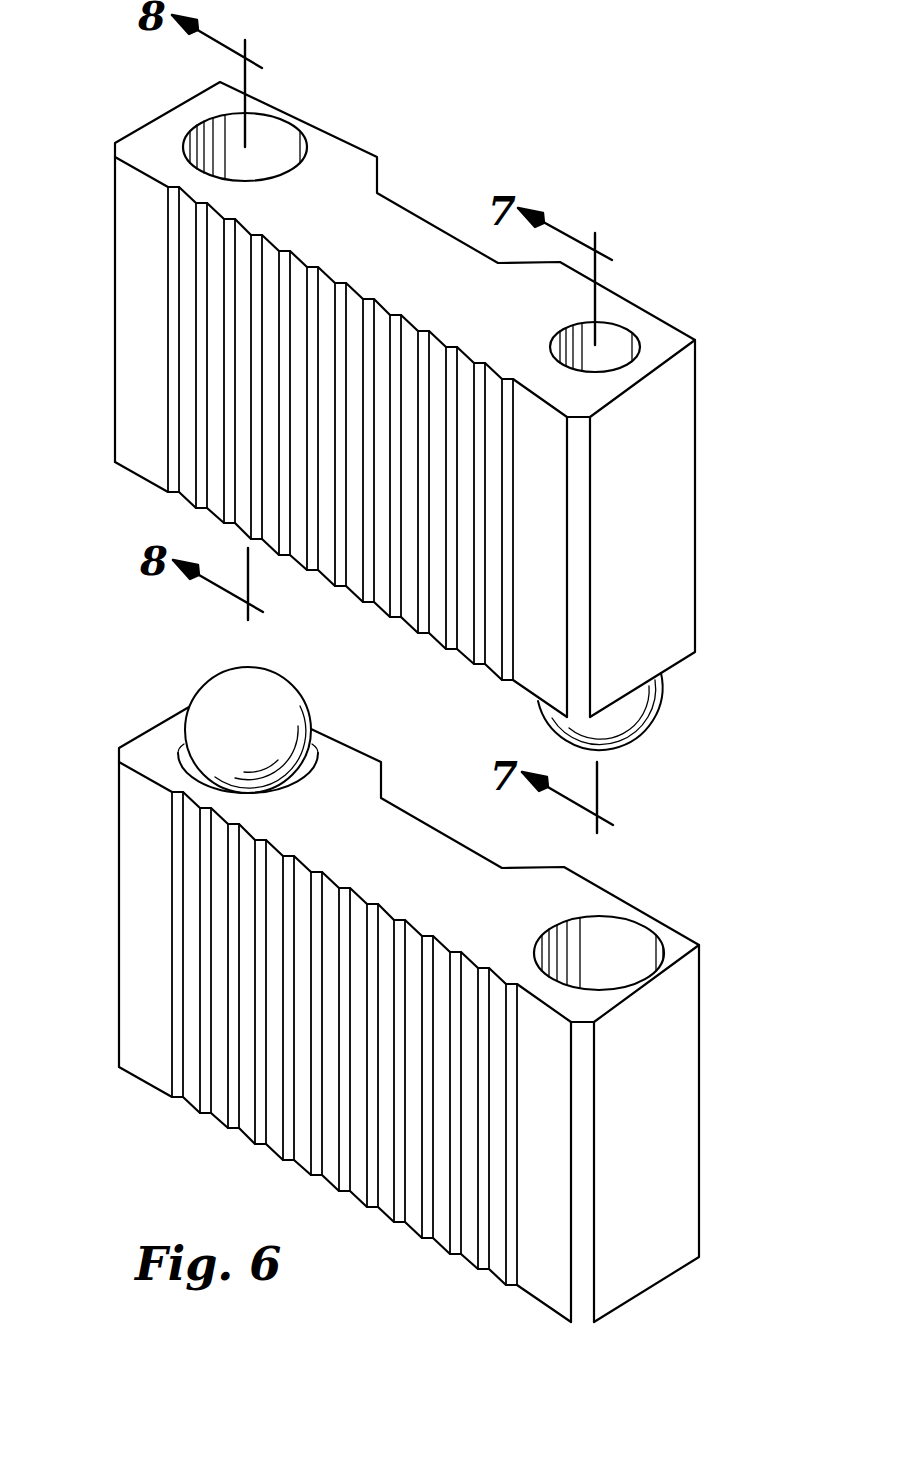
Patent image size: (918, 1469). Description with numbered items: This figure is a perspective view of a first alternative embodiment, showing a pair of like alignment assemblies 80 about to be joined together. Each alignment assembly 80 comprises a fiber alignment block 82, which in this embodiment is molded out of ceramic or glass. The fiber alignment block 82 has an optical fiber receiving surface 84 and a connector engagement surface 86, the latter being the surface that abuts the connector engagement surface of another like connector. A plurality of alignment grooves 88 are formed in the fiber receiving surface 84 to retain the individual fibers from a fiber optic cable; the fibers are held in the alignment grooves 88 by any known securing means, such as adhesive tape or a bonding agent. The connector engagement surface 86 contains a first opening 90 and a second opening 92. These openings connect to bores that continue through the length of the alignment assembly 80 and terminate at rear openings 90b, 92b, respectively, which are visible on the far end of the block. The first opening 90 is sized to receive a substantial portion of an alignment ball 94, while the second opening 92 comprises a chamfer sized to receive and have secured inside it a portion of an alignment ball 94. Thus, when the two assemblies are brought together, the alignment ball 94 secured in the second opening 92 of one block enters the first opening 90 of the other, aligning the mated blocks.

The alignment assembly 80 is at (418, 691).
The fiber alignment block 82 is at (385, 691).
The optical fiber receiving surface 84 is at (560, 544).
The connector engagement surface 86 is at (339, 836).
The alignment grooves 88 is at (397, 322).
The first opening 90 is at (616, 956).
The rear opening 90b is at (277, 133).
The second opening 92 is at (177, 757).
The rear opening 92b is at (615, 340).
The alignment ball 94 is at (218, 692).